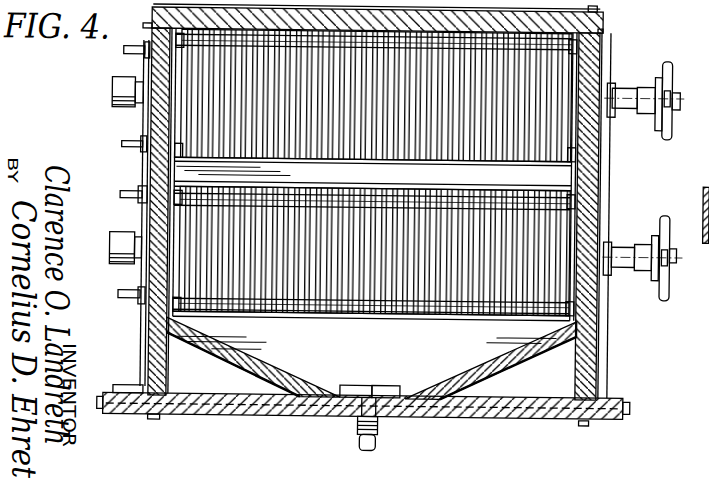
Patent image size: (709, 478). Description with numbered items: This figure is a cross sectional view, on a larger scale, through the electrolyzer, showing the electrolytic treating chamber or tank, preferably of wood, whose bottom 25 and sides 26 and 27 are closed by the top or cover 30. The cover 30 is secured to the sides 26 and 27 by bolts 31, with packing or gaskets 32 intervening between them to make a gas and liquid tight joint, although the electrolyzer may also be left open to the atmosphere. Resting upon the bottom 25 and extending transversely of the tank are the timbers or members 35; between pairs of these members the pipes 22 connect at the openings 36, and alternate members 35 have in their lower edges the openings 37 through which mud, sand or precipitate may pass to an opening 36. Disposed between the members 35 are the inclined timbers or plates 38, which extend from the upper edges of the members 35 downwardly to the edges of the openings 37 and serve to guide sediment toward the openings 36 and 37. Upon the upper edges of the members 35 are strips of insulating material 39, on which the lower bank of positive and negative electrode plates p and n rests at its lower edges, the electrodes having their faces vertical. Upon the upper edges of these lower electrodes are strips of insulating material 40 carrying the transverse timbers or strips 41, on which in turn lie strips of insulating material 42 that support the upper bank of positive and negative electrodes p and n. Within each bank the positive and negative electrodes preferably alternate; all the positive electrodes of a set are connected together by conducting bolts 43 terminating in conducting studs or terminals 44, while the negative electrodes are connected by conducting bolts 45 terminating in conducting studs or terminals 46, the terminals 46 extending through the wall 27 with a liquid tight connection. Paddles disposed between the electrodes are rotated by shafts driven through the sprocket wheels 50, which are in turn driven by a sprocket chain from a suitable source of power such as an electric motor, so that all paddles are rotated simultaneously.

The pipe 22 is at (385, 440).
The bottom 25 is at (552, 414).
The side 26 is at (600, 52).
The side 27 is at (150, 178).
The top or cover 30 is at (603, 18).
The bolt 31 is at (598, 4).
The packing or gasket 32 is at (148, 27).
The timber or member 35 is at (366, 343).
The opening 36 is at (376, 383).
The opening 37 is at (396, 380).
The timber or plate 38 is at (231, 362).
The strip of insulating material 39 is at (437, 317).
The strip of insulating material 40 is at (344, 184).
The transverse timber or strip 41 is at (372, 175).
The strip of insulating material 42 is at (522, 163).
The conducting bolt 43 is at (577, 40).
The conducting stud or terminal 44 is at (122, 49).
The conducting bolt 45 is at (124, 199).
The conducting stud or terminal 46 is at (129, 144).
The sprocket wheel 50 is at (670, 67).
The negative electrode plate n is at (218, 78).
The positive electrode plate p is at (208, 104).